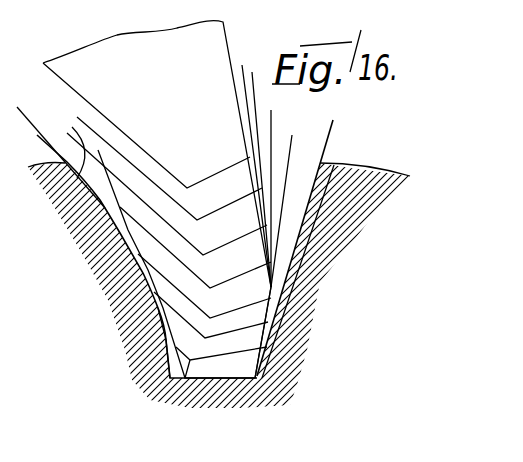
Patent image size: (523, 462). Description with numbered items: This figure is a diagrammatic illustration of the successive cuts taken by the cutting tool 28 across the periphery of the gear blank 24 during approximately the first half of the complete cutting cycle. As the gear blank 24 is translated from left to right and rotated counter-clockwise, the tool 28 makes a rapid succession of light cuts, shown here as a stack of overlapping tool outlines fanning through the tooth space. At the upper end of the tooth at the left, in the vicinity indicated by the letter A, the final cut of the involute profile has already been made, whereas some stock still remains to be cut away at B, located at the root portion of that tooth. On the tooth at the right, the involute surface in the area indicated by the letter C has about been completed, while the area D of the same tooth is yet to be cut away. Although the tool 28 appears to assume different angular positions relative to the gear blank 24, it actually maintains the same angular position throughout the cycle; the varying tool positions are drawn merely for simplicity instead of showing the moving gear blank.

The cutting tool 28 is at (228, 38).
The gear blank 24 is at (377, 183).
The upper end of the left tooth A is at (64, 135).
The root portion of the left tooth B is at (167, 362).
The completed involute area of the right tooth C is at (265, 353).
The uncut area of the right tooth D is at (327, 197).